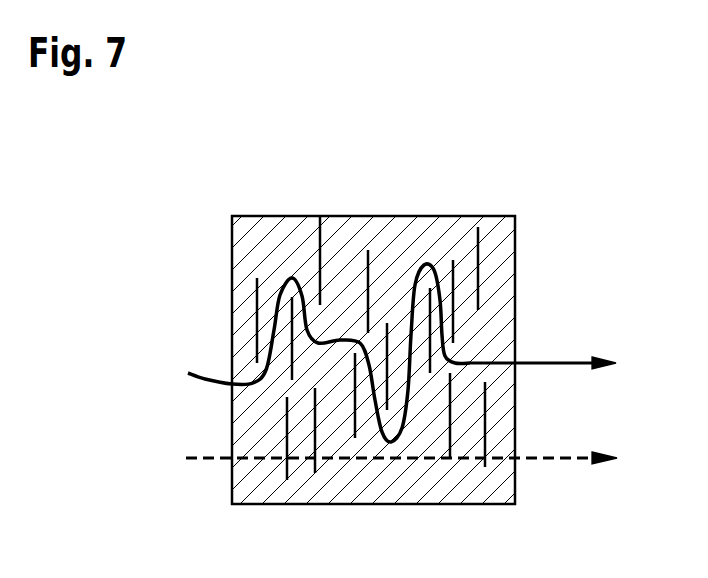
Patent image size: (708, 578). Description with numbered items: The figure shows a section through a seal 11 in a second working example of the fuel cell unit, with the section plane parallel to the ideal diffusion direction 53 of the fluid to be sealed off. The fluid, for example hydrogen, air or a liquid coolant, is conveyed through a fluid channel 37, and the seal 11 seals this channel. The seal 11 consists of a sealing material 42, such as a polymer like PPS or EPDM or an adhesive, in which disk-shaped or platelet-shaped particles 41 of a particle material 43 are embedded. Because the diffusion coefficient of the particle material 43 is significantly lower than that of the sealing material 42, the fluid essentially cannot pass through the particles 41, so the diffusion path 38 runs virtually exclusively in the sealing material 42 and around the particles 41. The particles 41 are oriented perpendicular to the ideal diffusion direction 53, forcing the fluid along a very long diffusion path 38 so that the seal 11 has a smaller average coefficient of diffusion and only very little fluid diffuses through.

The seal 11 is at (574, 178).
The fluid channel 37 is at (177, 426).
The diffusion path 38 is at (571, 362).
The particles 41 is at (257, 308).
The sealing material 42 is at (377, 230).
The particle material 43 is at (478, 238).
The ideal diffusion direction 53 is at (569, 460).